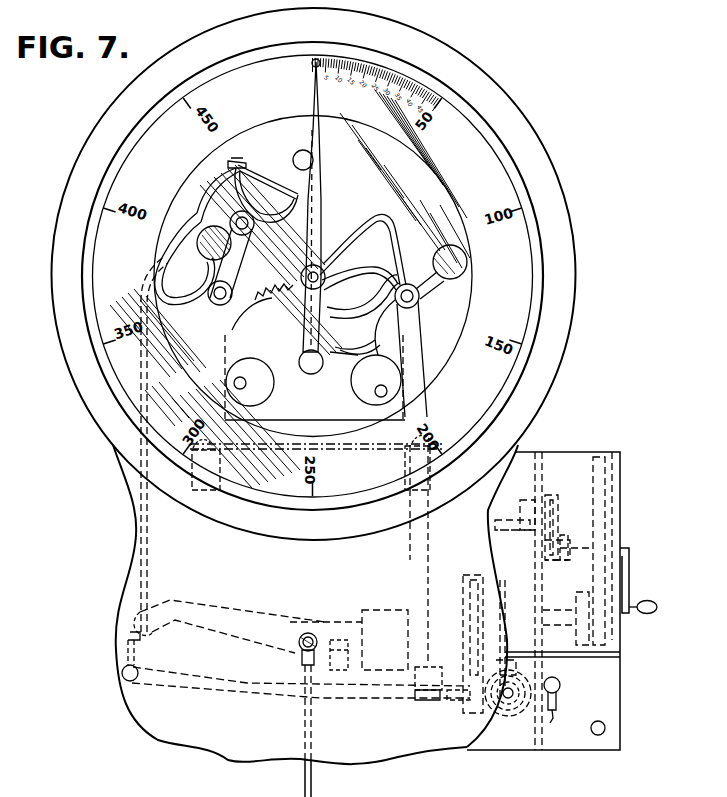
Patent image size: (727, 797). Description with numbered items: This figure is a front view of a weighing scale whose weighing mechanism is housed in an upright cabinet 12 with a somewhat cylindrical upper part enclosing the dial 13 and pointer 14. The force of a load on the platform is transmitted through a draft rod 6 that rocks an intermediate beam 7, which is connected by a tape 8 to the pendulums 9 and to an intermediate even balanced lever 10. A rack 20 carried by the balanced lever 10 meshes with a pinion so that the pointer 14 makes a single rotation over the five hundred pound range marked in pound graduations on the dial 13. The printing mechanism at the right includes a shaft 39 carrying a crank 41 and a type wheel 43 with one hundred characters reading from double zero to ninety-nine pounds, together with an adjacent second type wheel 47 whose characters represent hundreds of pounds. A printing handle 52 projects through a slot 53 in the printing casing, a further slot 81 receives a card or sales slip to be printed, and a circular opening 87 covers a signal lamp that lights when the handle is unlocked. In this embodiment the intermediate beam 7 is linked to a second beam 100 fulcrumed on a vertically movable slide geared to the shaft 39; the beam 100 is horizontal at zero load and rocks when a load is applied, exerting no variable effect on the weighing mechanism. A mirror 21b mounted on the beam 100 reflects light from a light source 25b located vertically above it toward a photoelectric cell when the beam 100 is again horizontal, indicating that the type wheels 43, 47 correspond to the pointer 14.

The draft rod 6 is at (304, 788).
The intermediate beam 7 is at (269, 620).
The tape 8 is at (143, 524).
The pendulums 9 is at (274, 387).
The intermediate even balanced lever 10 is at (214, 180).
The cabinet 12 is at (130, 589).
The dial 13 is at (281, 447).
The pointer 14 is at (318, 141).
The rack 20 is at (270, 302).
The mirror 21b is at (408, 696).
The light source 25b is at (154, 791).
The shaft 39 is at (572, 548).
The crank 41 is at (651, 608).
The type wheel 43 is at (605, 484).
The second type wheel 47 is at (578, 607).
The printing handle 52 is at (560, 684).
The slot 53 is at (554, 712).
The slot 81 is at (519, 656).
The circular opening 87 is at (605, 727).
The second beam 100 is at (249, 683).